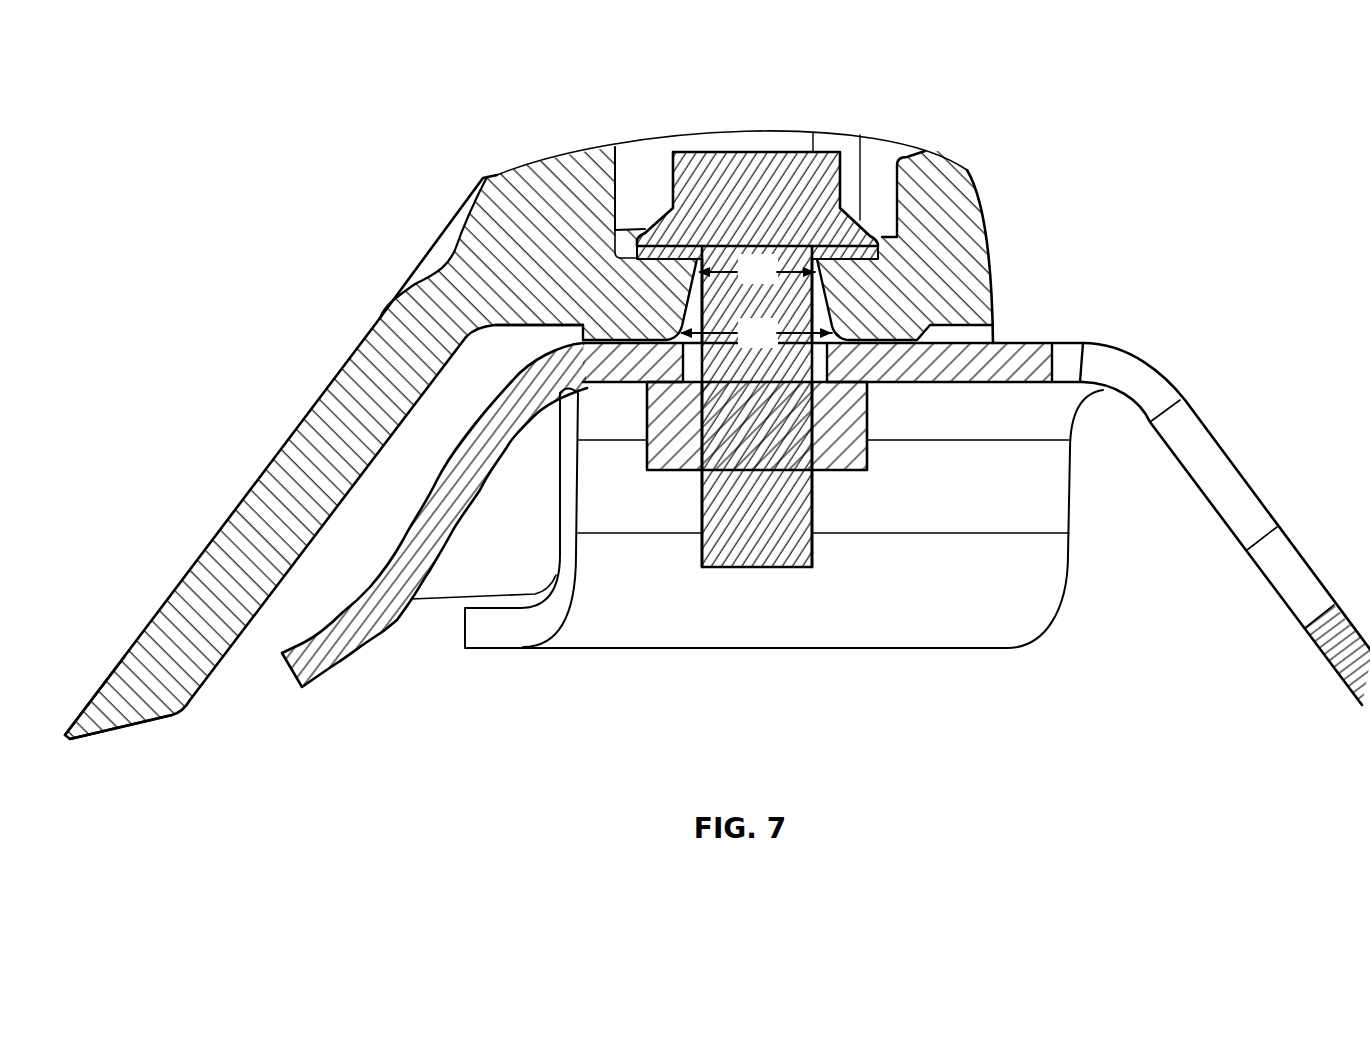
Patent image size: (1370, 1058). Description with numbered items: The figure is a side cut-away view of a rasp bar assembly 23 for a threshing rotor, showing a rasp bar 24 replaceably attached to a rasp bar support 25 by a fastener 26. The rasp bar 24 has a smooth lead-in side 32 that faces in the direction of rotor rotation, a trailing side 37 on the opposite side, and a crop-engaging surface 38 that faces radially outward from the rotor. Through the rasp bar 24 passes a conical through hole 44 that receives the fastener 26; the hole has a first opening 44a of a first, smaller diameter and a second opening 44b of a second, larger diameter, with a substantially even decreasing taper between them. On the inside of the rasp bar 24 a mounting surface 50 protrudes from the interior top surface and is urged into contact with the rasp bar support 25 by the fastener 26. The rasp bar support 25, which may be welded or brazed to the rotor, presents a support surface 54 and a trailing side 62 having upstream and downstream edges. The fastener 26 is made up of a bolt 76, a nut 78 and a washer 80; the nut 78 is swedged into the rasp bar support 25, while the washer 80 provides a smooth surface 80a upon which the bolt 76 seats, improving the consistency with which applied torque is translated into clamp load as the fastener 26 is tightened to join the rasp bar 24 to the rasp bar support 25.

The rasp bar assembly 23 is at (443, 152).
The rasp bar 24 is at (264, 462).
The rasp bar support 25 is at (1220, 447).
The fastener 26 is at (822, 148).
The lead-in side 32 is at (187, 555).
The trailing side 37 is at (990, 262).
The crop-engaging surface 38 is at (577, 163).
The through hole 44 is at (885, 337).
The first opening 44a is at (702, 270).
The second opening 44b is at (688, 325).
The mounting surface 50 is at (818, 310).
The support surface 54 is at (995, 342).
The trailing side 62 is at (1247, 512).
The bolt 76 is at (708, 160).
The nut 78 is at (670, 465).
The washer 80 is at (618, 250).
The smooth surface 80a is at (600, 311).